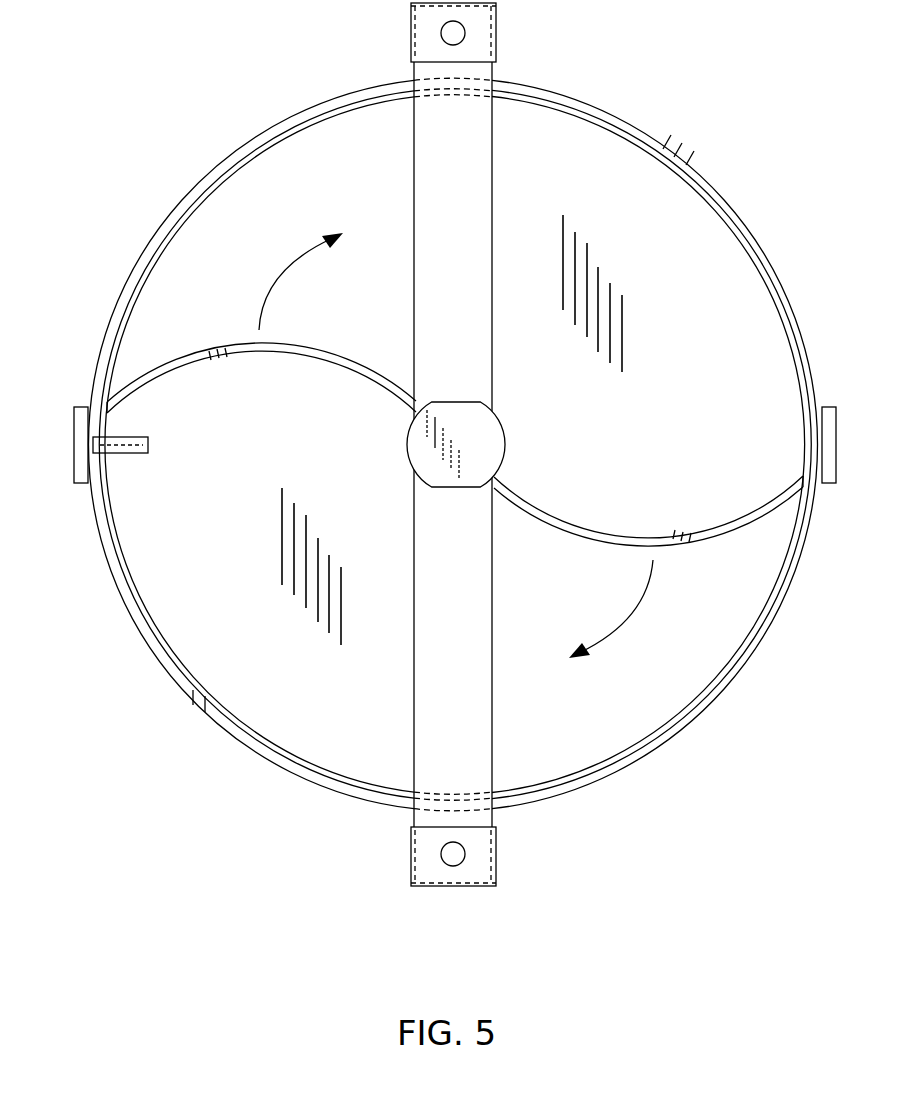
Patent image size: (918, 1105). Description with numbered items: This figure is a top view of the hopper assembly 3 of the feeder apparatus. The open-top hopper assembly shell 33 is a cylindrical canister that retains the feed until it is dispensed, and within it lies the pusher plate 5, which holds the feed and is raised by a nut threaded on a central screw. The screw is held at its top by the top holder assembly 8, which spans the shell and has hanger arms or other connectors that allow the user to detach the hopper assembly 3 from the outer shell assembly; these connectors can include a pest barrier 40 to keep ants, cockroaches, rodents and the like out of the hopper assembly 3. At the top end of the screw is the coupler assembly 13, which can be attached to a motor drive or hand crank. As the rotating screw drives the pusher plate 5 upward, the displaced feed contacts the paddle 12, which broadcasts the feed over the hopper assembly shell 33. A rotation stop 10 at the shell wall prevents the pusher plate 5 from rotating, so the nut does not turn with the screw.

The hopper assembly 3 is at (183, 724).
The pusher plate 5 is at (316, 735).
The top holder assembly 8 is at (415, 191).
The rotation stop 10 is at (122, 454).
The paddle 12 is at (282, 352).
The coupler assembly 13 is at (408, 450).
The hopper assembly shell 33 is at (127, 615).
The pest barrier 40 is at (485, 33).